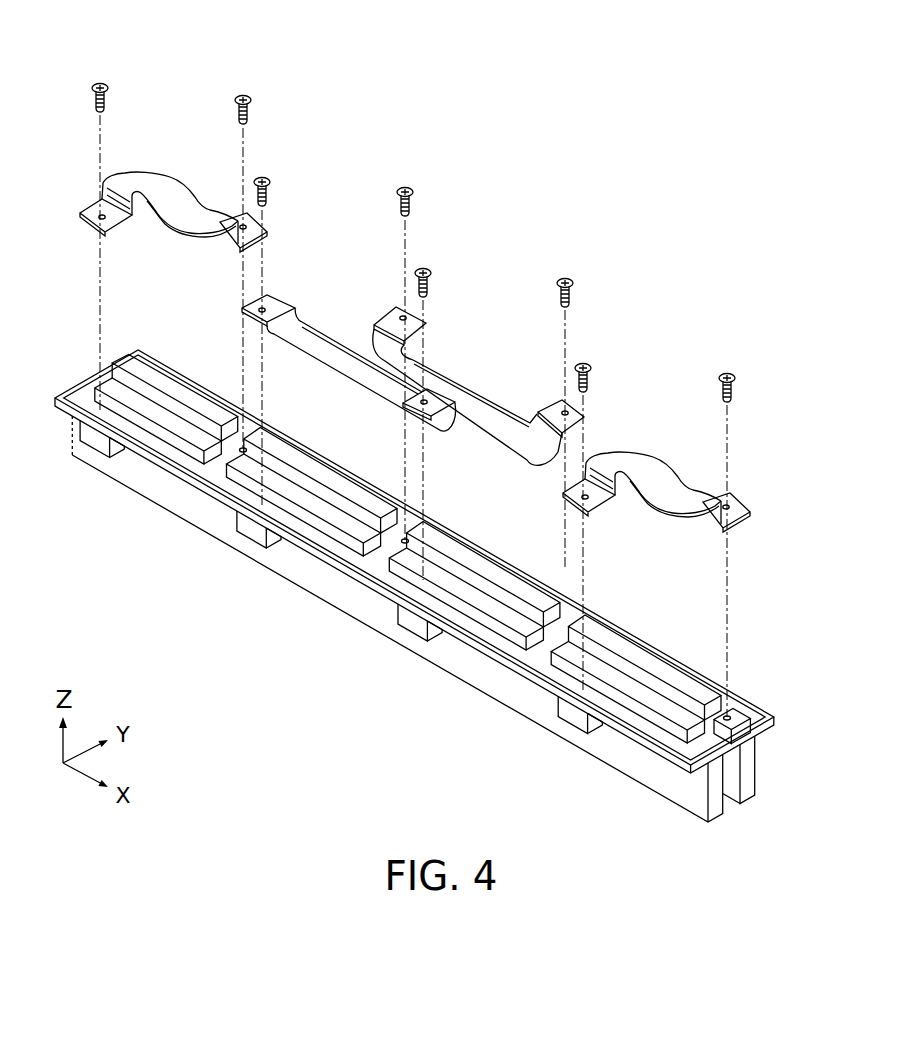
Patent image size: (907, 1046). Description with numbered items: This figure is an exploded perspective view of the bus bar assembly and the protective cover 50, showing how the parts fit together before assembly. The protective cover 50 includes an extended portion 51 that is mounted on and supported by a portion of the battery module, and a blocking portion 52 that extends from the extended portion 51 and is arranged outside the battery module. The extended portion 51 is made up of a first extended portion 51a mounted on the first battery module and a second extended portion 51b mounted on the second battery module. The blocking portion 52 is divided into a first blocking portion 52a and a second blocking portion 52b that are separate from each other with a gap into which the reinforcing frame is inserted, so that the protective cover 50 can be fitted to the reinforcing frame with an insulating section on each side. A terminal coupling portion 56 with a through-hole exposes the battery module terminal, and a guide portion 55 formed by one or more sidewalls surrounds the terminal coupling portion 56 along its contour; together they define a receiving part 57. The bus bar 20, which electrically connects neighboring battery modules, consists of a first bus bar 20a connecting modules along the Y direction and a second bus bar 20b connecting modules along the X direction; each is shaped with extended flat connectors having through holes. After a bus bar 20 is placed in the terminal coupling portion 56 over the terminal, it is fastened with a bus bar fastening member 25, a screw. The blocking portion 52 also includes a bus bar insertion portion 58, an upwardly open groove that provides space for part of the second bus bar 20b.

The bus bar 20 is at (337, 107).
The first bus bar 20a is at (163, 188).
The second bus bar 20b is at (330, 353).
The bus bar fastening member 25 is at (738, 384).
The protective cover 50 is at (471, 597).
The extended portion 51 is at (408, 549).
The first extended portion 51a is at (416, 538).
The second extended portion 51b is at (400, 560).
The blocking portion 52 is at (480, 630).
The first blocking portion 52a is at (717, 807).
The second blocking portion 52b is at (750, 767).
The guide portion 55 is at (550, 600).
The terminal coupling portion 56 is at (727, 713).
The receiving part 57 is at (412, 524).
The bus bar insertion portion 58 is at (347, 546).